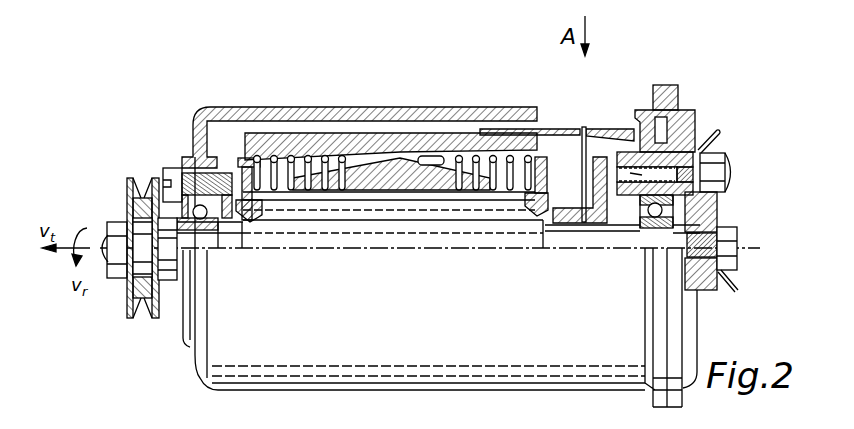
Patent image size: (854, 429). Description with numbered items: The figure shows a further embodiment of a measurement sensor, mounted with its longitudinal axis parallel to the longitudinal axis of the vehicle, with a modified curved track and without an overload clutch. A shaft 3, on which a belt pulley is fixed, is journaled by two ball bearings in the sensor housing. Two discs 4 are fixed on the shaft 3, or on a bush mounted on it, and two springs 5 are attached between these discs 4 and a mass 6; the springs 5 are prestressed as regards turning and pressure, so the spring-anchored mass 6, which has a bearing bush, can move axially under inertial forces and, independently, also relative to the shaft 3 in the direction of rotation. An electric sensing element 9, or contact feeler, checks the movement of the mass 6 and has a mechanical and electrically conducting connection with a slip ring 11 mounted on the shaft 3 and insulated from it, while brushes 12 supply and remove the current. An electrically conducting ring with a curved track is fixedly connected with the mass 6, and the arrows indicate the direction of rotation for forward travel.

The shaft 3 is at (232, 223).
The discs 4 is at (533, 174).
The springs 5 is at (432, 158).
The mass 6 is at (461, 138).
The electric sensing element 9 is at (586, 157).
The slip ring 11 is at (598, 157).
The brushes 12 is at (696, 216).